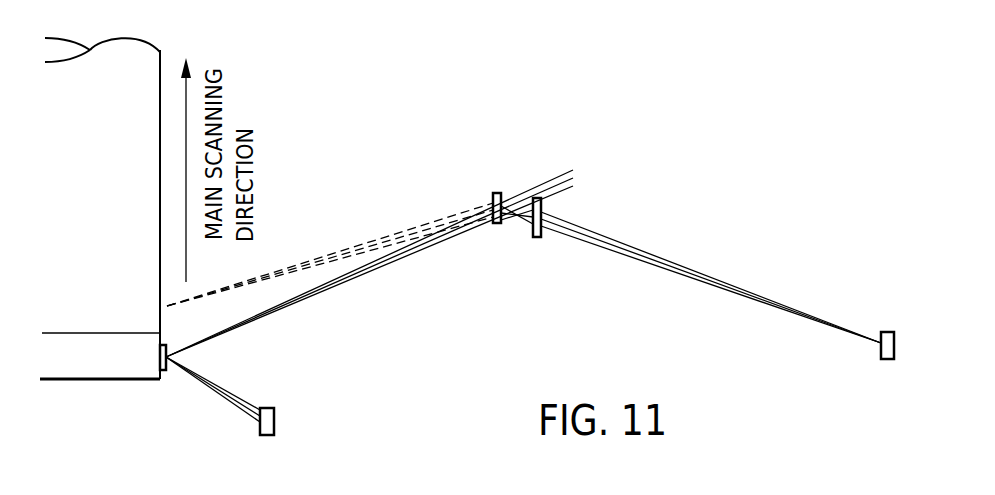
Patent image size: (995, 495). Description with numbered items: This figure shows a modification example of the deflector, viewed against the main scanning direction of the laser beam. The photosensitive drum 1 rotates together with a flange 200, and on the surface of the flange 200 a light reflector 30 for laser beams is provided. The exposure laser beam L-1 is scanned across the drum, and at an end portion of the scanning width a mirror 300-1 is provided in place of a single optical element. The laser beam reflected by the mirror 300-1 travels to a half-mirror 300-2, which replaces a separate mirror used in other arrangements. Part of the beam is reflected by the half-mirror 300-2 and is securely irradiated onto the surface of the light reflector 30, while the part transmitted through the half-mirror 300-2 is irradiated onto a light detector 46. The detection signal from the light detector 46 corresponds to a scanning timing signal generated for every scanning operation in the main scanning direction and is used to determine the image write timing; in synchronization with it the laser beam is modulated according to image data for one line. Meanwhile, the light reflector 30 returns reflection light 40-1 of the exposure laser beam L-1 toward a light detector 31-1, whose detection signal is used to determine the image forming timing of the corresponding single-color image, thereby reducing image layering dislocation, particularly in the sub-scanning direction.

The photosensitive drum 1 is at (147, 62).
The flange 200 is at (81, 368).
The light reflector 30 is at (168, 371).
The reflection light 40-1 is at (231, 397).
The light detector 31-1 is at (276, 426).
The exposure laser beam L-1 is at (588, 178).
The mirror 300-1 is at (497, 192).
The half-mirror 300-2 is at (537, 238).
The light detector 46 is at (880, 330).